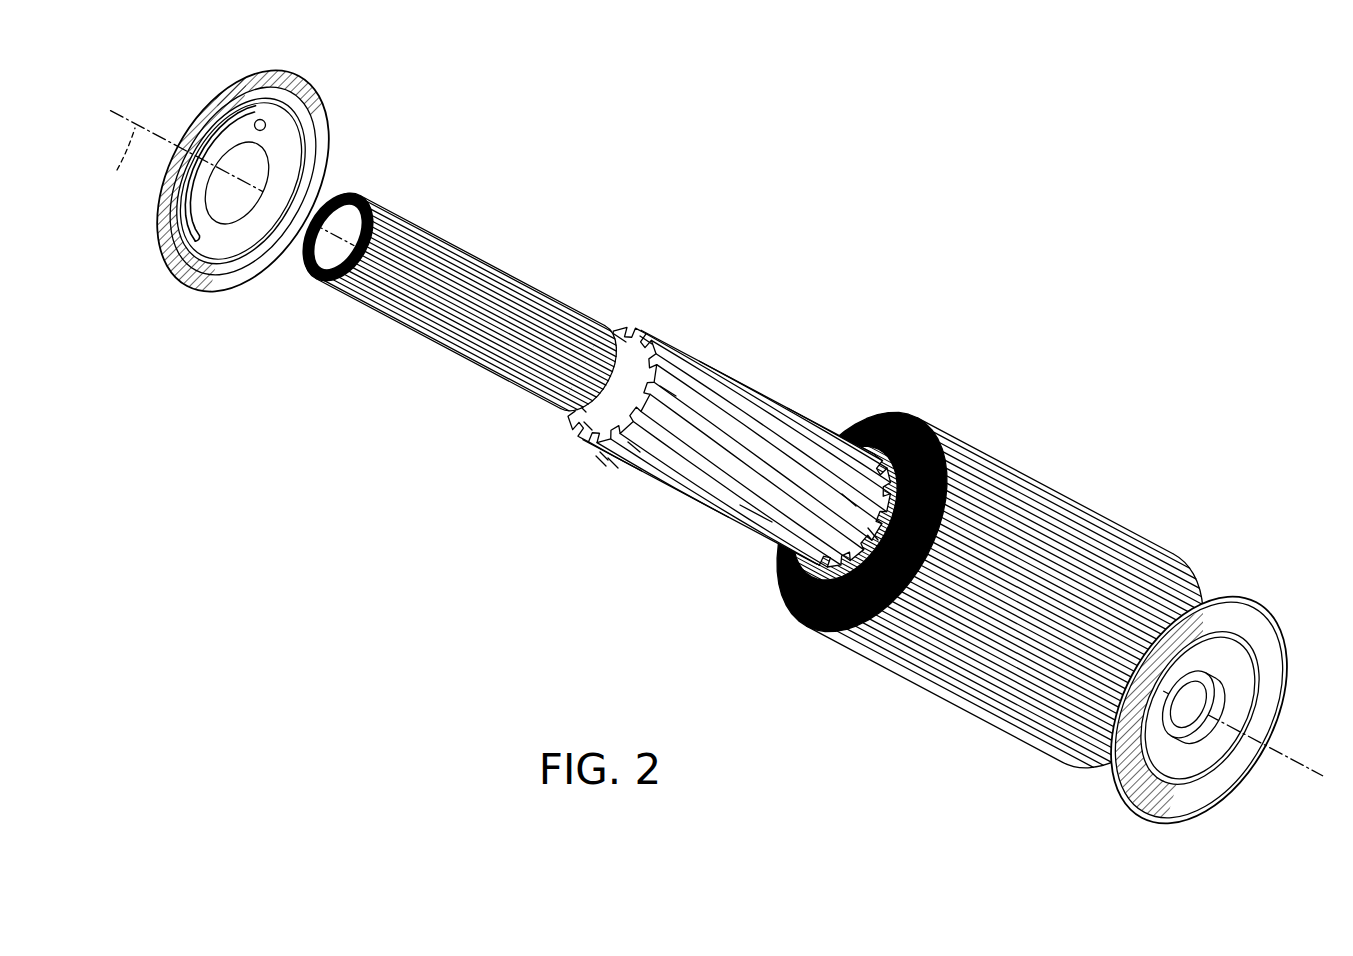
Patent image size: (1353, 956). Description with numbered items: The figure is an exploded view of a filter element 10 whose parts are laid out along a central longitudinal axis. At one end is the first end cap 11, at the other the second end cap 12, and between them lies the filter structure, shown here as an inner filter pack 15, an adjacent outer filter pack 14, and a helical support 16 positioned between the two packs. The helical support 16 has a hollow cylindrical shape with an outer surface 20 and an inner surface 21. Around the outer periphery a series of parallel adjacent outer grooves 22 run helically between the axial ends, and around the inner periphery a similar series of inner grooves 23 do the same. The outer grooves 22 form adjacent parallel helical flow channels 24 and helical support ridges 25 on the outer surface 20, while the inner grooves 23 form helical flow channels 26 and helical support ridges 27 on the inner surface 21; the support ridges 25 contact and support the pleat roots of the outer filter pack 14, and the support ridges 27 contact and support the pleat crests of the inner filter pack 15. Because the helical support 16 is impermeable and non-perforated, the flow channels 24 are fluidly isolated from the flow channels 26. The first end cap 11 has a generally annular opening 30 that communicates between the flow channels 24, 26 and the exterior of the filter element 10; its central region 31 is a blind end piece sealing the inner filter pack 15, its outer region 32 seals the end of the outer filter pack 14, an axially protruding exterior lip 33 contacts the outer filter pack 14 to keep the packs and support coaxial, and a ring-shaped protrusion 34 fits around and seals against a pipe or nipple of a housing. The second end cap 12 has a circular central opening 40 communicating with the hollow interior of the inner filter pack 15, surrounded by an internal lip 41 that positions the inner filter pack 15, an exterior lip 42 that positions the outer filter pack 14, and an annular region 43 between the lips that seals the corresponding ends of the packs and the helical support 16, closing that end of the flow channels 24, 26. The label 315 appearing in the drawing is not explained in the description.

The filter element 10 is at (904, 268).
The first end cap 11 is at (218, 268).
The second end cap 12 is at (1217, 623).
The outer filter pack 14 is at (943, 672).
The inner filter pack 15 is at (451, 262).
The helical support 16 is at (717, 503).
The outer surface 20 is at (762, 515).
The inner surface 21 is at (668, 392).
The outer grooves 22 is at (600, 460).
The inner grooves 23 is at (580, 408).
The helical flow channels 24 is at (603, 457).
The helical support ridges 25 is at (613, 463).
The helical flow channels 26 is at (620, 338).
The helical support ridges 27 is at (645, 340).
The spline end face 315 is at (633, 447).
The annular opening 30 is at (237, 133).
The central region 31 is at (264, 121).
The outer region 32 is at (307, 150).
The exterior lip 33 is at (320, 178).
The protrusion 34 is at (173, 231).
The central opening 40 is at (1177, 720).
The internal lip 41 is at (1217, 686).
The exterior lip 42 is at (1260, 705).
The annular region 43 is at (1217, 732).